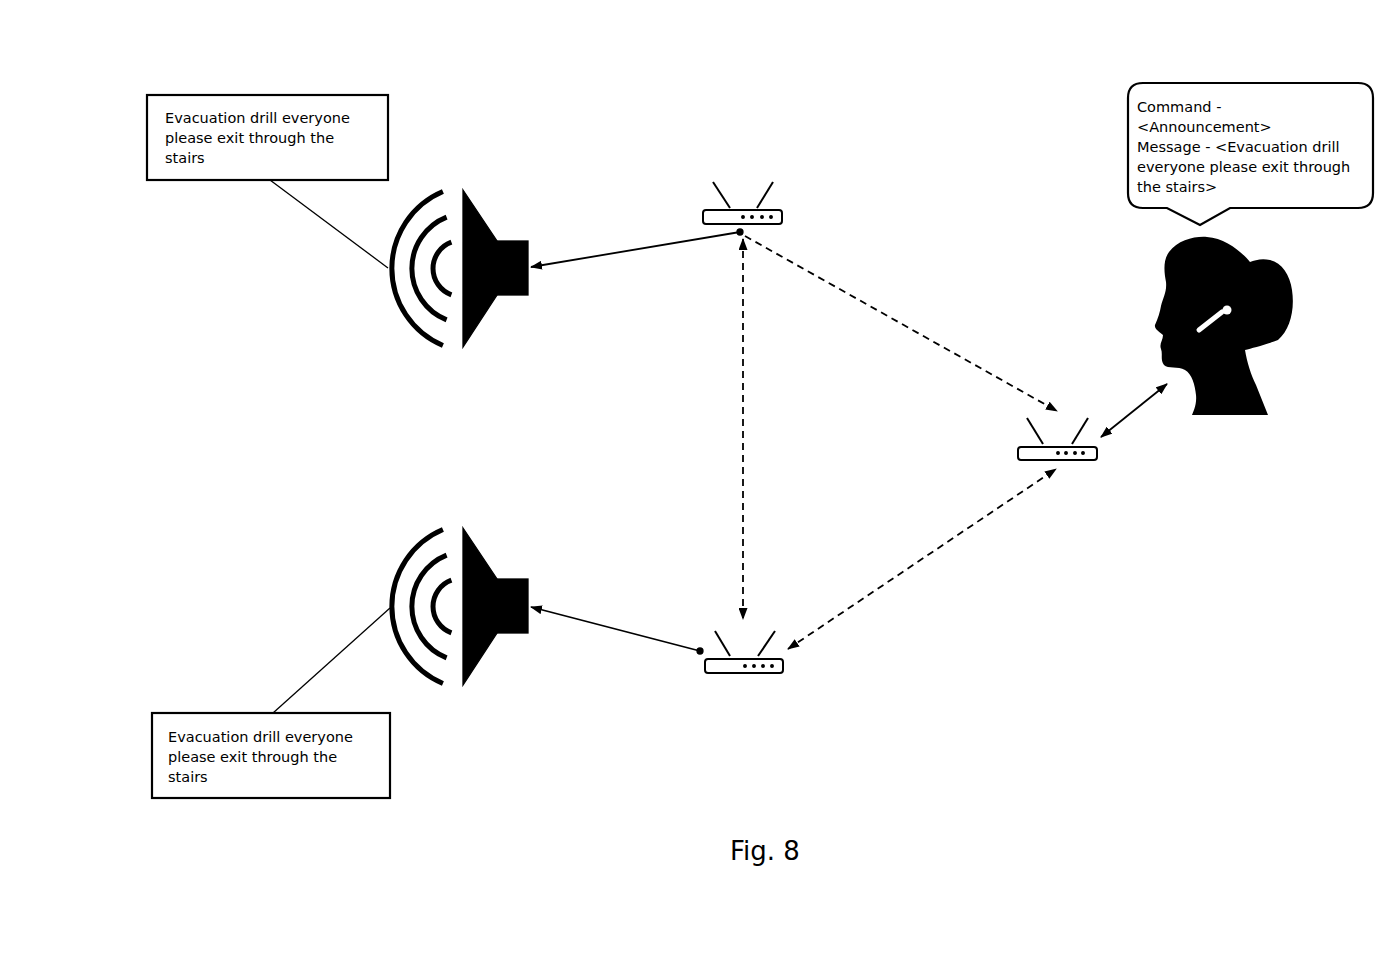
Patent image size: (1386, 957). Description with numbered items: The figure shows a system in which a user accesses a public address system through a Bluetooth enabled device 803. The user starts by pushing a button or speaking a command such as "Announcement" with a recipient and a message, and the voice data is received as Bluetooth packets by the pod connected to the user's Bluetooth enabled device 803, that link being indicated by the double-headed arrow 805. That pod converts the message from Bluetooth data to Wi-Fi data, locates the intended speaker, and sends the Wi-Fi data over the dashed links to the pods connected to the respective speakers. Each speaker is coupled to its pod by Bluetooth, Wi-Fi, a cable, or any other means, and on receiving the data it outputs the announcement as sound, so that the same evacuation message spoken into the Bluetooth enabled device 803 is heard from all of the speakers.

The Bluetooth enabled device 803 is at (1287, 320).
The bidirectional communication link 805 is at (1140, 410).